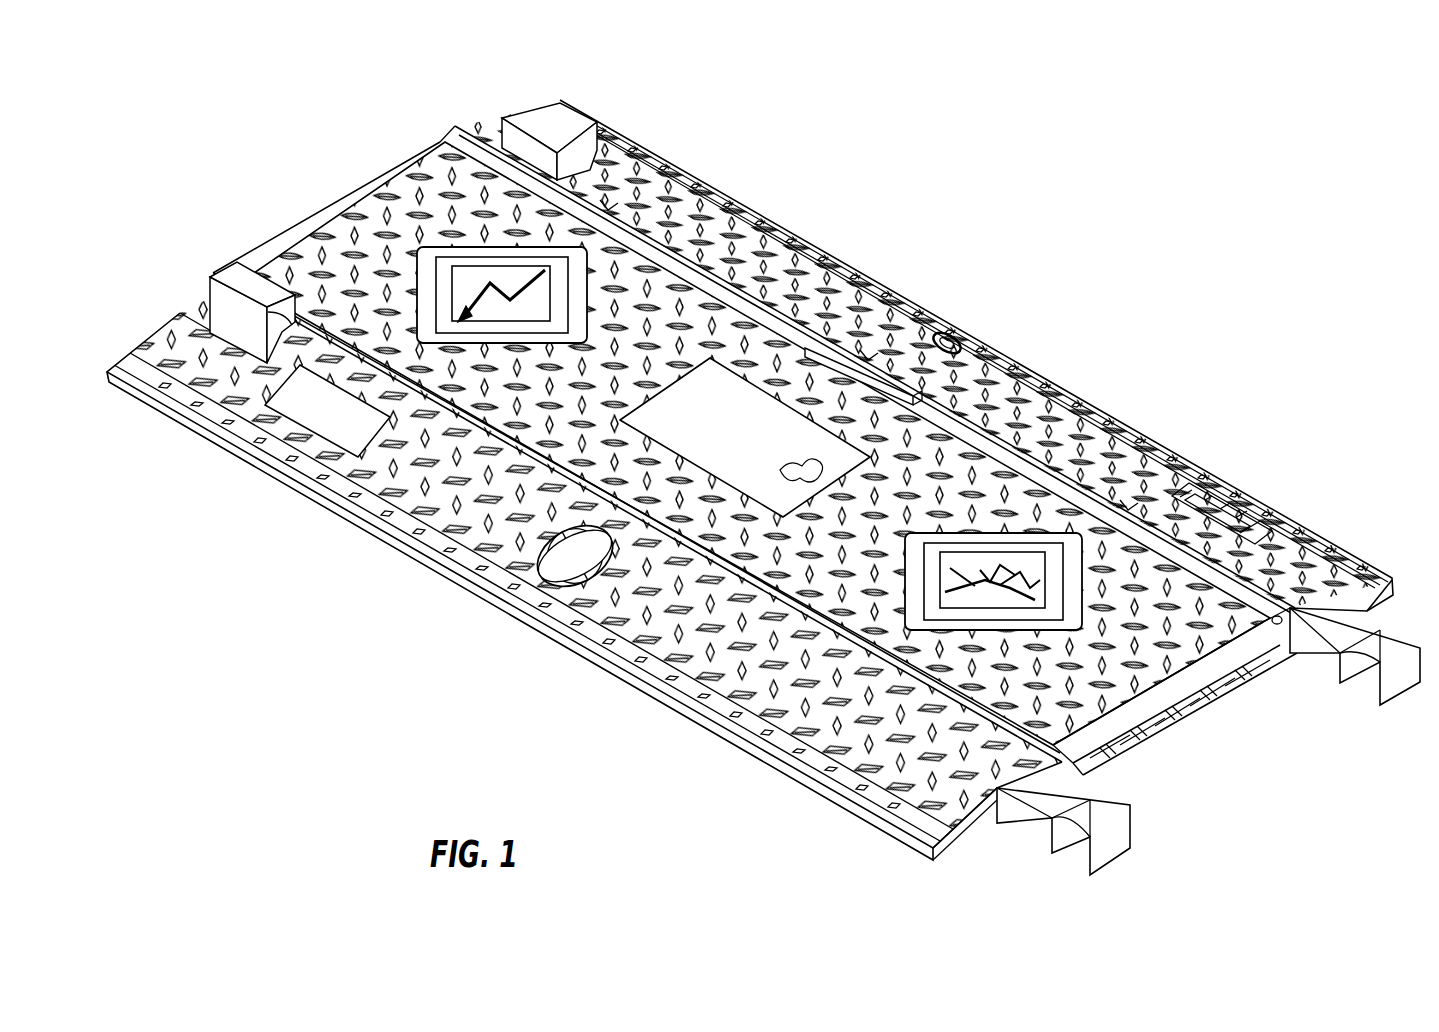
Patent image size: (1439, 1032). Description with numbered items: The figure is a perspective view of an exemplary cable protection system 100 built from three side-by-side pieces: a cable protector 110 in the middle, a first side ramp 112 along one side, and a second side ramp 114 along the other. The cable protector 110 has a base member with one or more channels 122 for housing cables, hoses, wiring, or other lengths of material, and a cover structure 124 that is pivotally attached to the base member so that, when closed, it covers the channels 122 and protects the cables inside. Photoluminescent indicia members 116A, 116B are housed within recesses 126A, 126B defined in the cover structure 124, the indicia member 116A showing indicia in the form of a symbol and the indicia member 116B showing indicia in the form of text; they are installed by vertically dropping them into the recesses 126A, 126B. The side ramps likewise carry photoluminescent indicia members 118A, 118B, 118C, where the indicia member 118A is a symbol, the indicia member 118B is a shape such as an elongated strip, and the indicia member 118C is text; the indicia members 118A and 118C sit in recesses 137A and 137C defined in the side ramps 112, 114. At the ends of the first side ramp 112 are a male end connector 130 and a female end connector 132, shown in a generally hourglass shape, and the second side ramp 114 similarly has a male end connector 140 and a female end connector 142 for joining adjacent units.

The cable protection system 100 is at (1344, 485).
The cable protector 110 is at (372, 178).
The first side ramp 112 is at (150, 335).
The second side ramp 114 is at (536, 105).
The photoluminescent indicia member 116A is at (548, 268).
The photoluminescent indicia member 116B is at (808, 347).
The indicia member 118A is at (950, 338).
The indicia member 118B is at (1373, 578).
The indicia member 118C is at (290, 415).
The channel 122 is at (1117, 733).
The cover structure 124 is at (1150, 690).
The recess 126A is at (432, 268).
The recess 126B is at (738, 345).
The male end connector 130 is at (1120, 850).
The female end connector 132 is at (212, 302).
The recess 137A is at (990, 350).
The recess 137C is at (325, 470).
The male end connector 140 is at (1403, 688).
The female end connector 142 is at (502, 122).